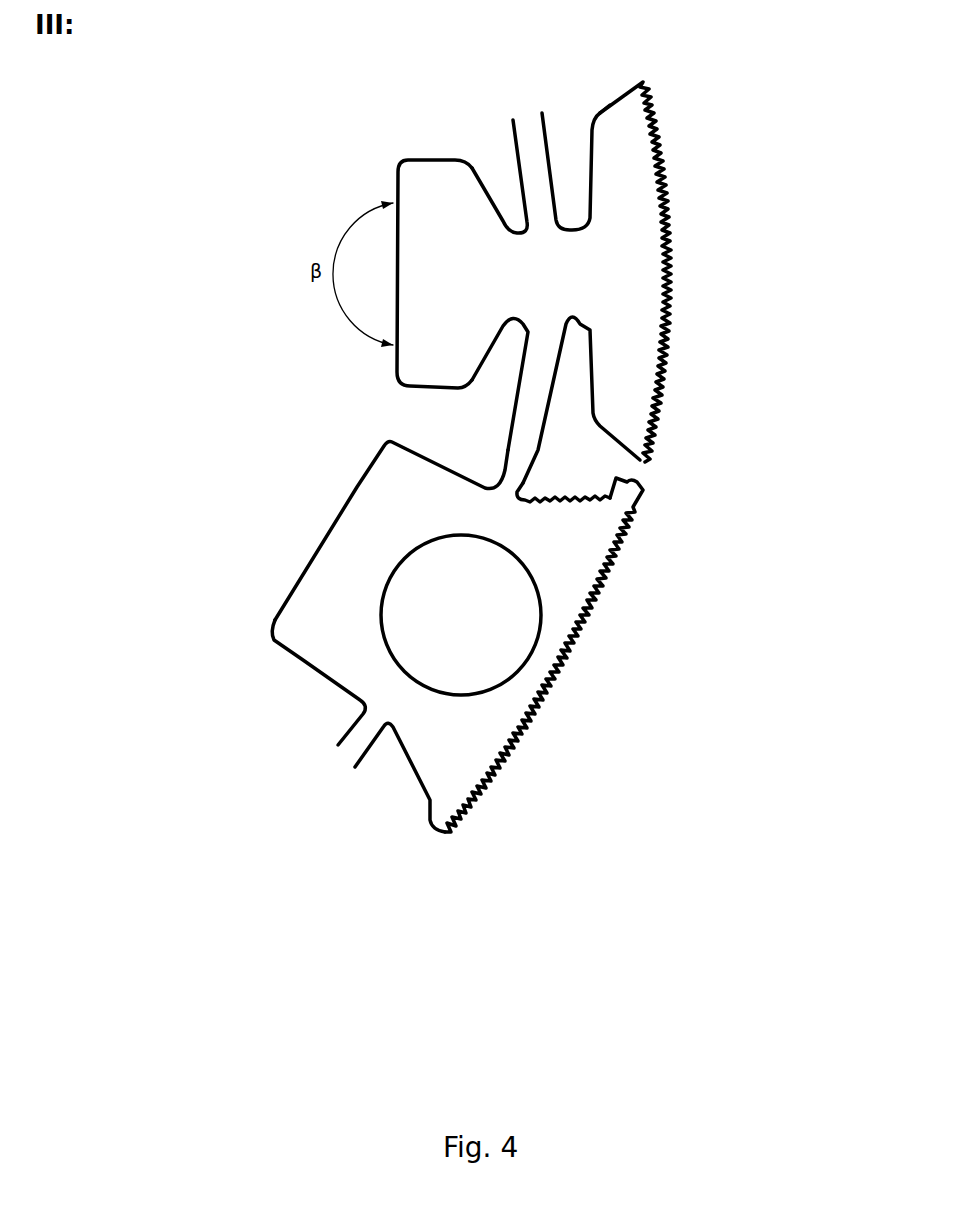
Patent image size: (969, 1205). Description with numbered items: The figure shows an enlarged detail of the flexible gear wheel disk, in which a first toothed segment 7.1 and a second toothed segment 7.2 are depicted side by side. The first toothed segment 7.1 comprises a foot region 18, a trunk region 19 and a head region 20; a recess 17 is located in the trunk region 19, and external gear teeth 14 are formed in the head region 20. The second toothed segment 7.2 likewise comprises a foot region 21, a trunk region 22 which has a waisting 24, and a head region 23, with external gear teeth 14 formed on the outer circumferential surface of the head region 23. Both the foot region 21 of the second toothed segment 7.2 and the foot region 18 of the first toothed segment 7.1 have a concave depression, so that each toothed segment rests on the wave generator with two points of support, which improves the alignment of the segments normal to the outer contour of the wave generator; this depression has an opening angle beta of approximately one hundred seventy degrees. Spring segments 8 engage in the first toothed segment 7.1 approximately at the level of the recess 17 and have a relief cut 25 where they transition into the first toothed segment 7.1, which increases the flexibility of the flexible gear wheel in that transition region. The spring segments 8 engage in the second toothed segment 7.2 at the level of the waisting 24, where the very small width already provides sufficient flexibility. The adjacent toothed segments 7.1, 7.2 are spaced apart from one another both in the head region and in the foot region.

The spring segment 8 is at (535, 153).
The external gear teeth 14 is at (657, 113).
The first toothed segment 7.1 is at (473, 752).
The second toothed segment 7.2 is at (628, 195).
The recess 17 is at (490, 627).
The foot region 18 is at (357, 487).
The trunk region 19 is at (512, 527).
The head region 20 is at (588, 578).
The foot region 21 is at (393, 182).
The trunk region 22 is at (620, 360).
The head region 23 is at (638, 337).
The waisting 24 is at (545, 270).
The relief cut 25 is at (532, 493).